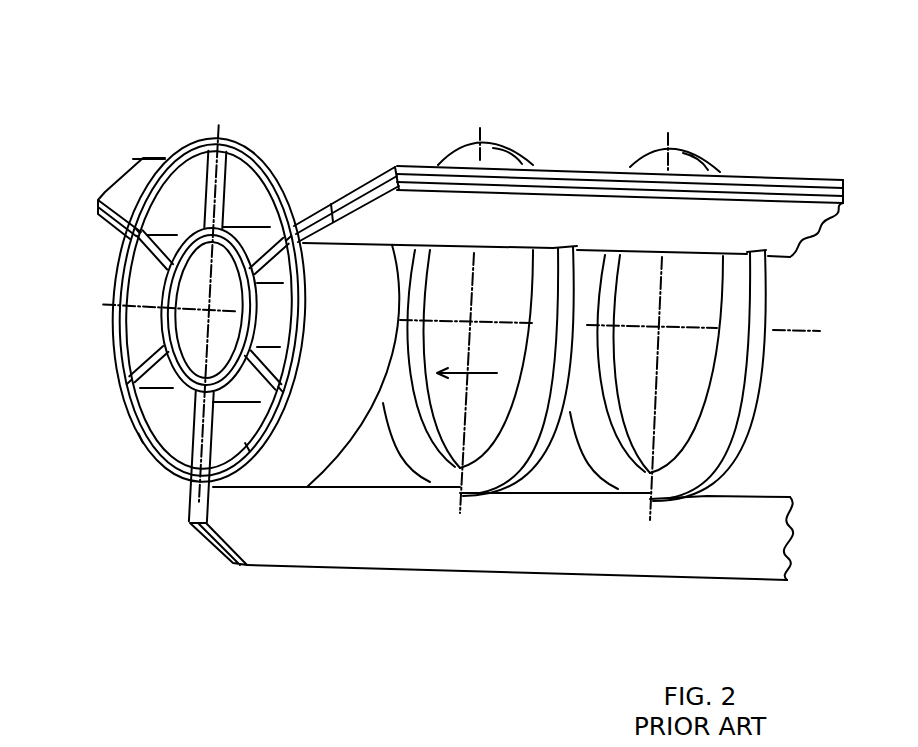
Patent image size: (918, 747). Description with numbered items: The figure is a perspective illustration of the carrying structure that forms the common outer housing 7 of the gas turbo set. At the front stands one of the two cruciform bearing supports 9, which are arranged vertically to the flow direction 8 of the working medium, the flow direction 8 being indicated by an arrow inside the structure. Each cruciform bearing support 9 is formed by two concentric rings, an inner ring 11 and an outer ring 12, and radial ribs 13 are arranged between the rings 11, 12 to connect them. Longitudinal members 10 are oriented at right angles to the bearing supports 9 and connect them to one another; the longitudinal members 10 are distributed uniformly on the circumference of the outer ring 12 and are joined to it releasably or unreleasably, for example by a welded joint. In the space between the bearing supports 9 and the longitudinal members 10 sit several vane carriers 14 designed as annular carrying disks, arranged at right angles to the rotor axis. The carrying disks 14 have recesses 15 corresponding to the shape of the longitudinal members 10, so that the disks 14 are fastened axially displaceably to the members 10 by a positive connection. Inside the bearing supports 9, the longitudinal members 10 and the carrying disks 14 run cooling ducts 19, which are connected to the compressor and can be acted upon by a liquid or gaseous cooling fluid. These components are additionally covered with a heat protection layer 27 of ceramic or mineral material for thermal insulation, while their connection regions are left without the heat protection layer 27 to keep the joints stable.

The outer housing 7 is at (250, 167).
The flow direction 8 is at (453, 375).
The cruciform bearing support 9 is at (203, 351).
The longitudinal member 10 is at (545, 188).
The inner ring 11 is at (208, 310).
The outer ring 12 is at (169, 321).
The radial rib 13 is at (209, 310).
The vane carrier 14 is at (510, 453).
The recess 15 is at (747, 253).
The cooling duct 19 is at (209, 310).
The heat protection layer 27 is at (233, 148).